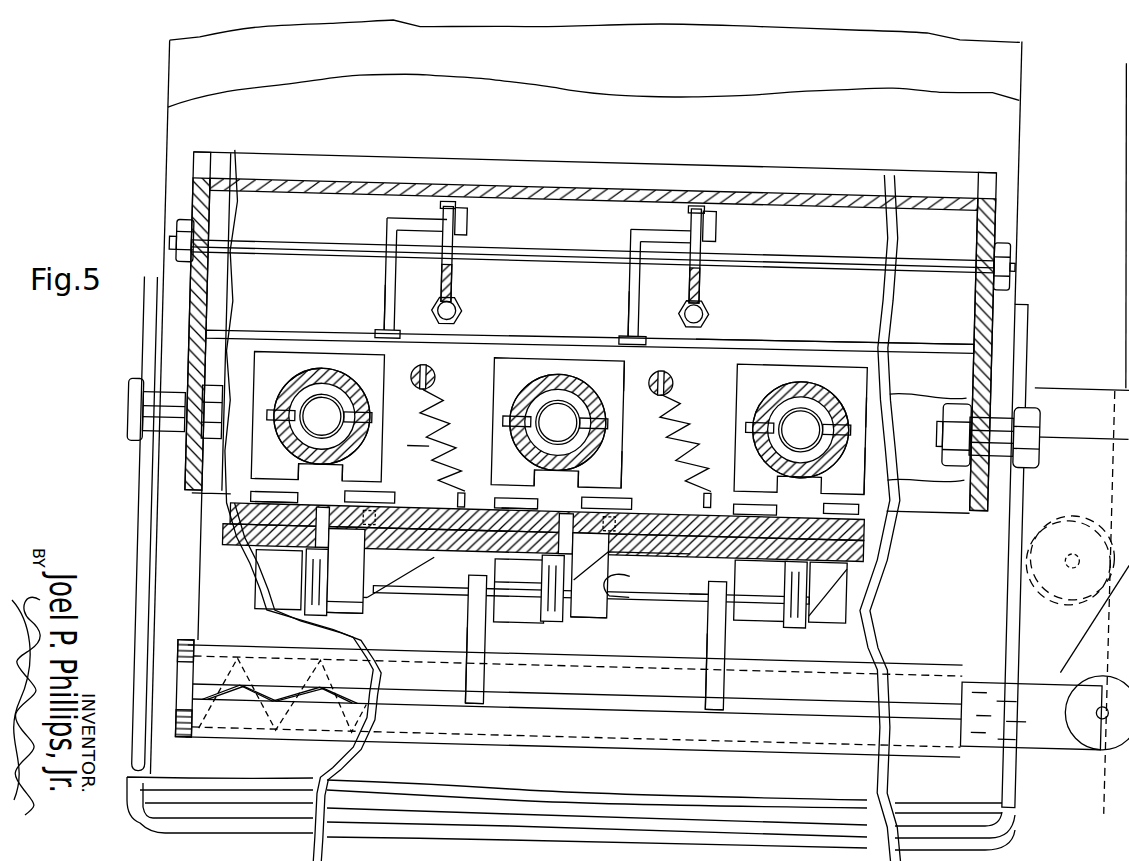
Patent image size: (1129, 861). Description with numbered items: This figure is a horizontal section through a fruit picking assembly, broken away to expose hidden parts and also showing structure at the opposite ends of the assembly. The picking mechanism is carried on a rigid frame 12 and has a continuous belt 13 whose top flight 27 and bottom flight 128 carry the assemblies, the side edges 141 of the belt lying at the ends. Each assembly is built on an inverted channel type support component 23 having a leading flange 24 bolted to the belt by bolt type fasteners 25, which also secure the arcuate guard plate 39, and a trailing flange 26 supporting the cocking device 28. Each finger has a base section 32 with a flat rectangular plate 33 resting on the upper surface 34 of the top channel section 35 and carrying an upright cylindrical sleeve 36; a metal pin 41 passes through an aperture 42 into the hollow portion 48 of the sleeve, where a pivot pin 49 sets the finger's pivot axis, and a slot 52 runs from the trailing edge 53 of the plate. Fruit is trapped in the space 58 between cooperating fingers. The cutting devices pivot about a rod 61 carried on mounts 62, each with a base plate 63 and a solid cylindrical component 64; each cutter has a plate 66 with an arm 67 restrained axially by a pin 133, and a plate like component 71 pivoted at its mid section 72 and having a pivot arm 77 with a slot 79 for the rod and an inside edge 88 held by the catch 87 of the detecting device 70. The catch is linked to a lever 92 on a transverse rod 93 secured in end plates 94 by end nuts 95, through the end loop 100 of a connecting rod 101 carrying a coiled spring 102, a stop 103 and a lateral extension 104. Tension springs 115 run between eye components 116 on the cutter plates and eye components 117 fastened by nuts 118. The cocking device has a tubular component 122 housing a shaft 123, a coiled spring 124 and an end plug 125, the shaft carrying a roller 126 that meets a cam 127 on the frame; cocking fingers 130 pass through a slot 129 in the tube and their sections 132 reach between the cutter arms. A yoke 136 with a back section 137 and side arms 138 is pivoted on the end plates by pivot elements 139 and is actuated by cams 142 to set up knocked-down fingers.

The frame 12 is at (1124, 198).
The continuous belt 13 is at (1018, 81).
The inverted channel type support component 23 is at (207, 566).
The rigid flange 24 is at (562, 326).
The bolt type fasteners 25 is at (466, 300).
The flange 26 is at (206, 534).
The top flight of the belt 27 is at (945, 70).
The cocking device 28 is at (673, 738).
The base section 32 is at (645, 360).
The flat rectangular metal plate 33 is at (634, 460).
The upper surface 34 is at (928, 500).
The top channel section 35 is at (800, 326).
The upright cylindrical sleeve component 36 is at (350, 372).
The arcuate guard plate 39 is at (833, 152).
The metal pin 41 is at (836, 390).
The aperture 42 is at (314, 379).
The hollow portion 48 is at (554, 376).
The pivot pin 49 is at (616, 416).
The slot 52 is at (310, 470).
The trailing edge 53 is at (382, 492).
The space between fingers 58 is at (418, 440).
The rod 61 is at (450, 590).
The mounts 62 is at (262, 495).
The rectangular base plate 63 is at (310, 492).
The solid cylindrical component 64 is at (562, 612).
The flat rigid metal plate 66 is at (756, 500).
The arm 67 is at (770, 610).
The detecting device 70 is at (388, 272).
The plate like component 71 is at (708, 550).
The mid section 72 is at (514, 568).
The pivot arm 77 is at (390, 604).
The slot 79 is at (636, 588).
The catch 87 is at (435, 561).
The inside edge 88 is at (394, 609).
The lever 92 is at (454, 284).
The transversely extending rod 93 is at (562, 240).
The end plates 94 is at (192, 302).
The end nuts 95 is at (178, 222).
The end loop 100 is at (470, 214).
The connecting rod 101 is at (387, 302).
The coiled spring 102 is at (385, 498).
The stop 103 is at (438, 325).
The lateral extension 104 is at (394, 212).
The tension springs 115 is at (449, 410).
The eye component 116 is at (466, 490).
The eye component 117 is at (413, 362).
The nuts 118 is at (441, 356).
The elongated tubular component 122 is at (632, 646).
The solid metal shaft 123 is at (1036, 660).
The coiled spring 124 is at (312, 680).
The end plug 125 is at (190, 698).
The roller 126 is at (1073, 506).
The cam 127 is at (1100, 600).
The bottom flight of the belt 128 is at (208, 26).
The slot 129 is at (328, 736).
The fingers 130 is at (496, 658).
The finger section 132 is at (480, 624).
The pin 133 is at (484, 576).
The yoke 136 is at (535, 791).
The back section 137 is at (622, 793).
The side arms 138 is at (146, 496).
The pivot elements 139 is at (134, 407).
The side edges of the belt 141 is at (1019, 47).
The cams 142 is at (1080, 366).